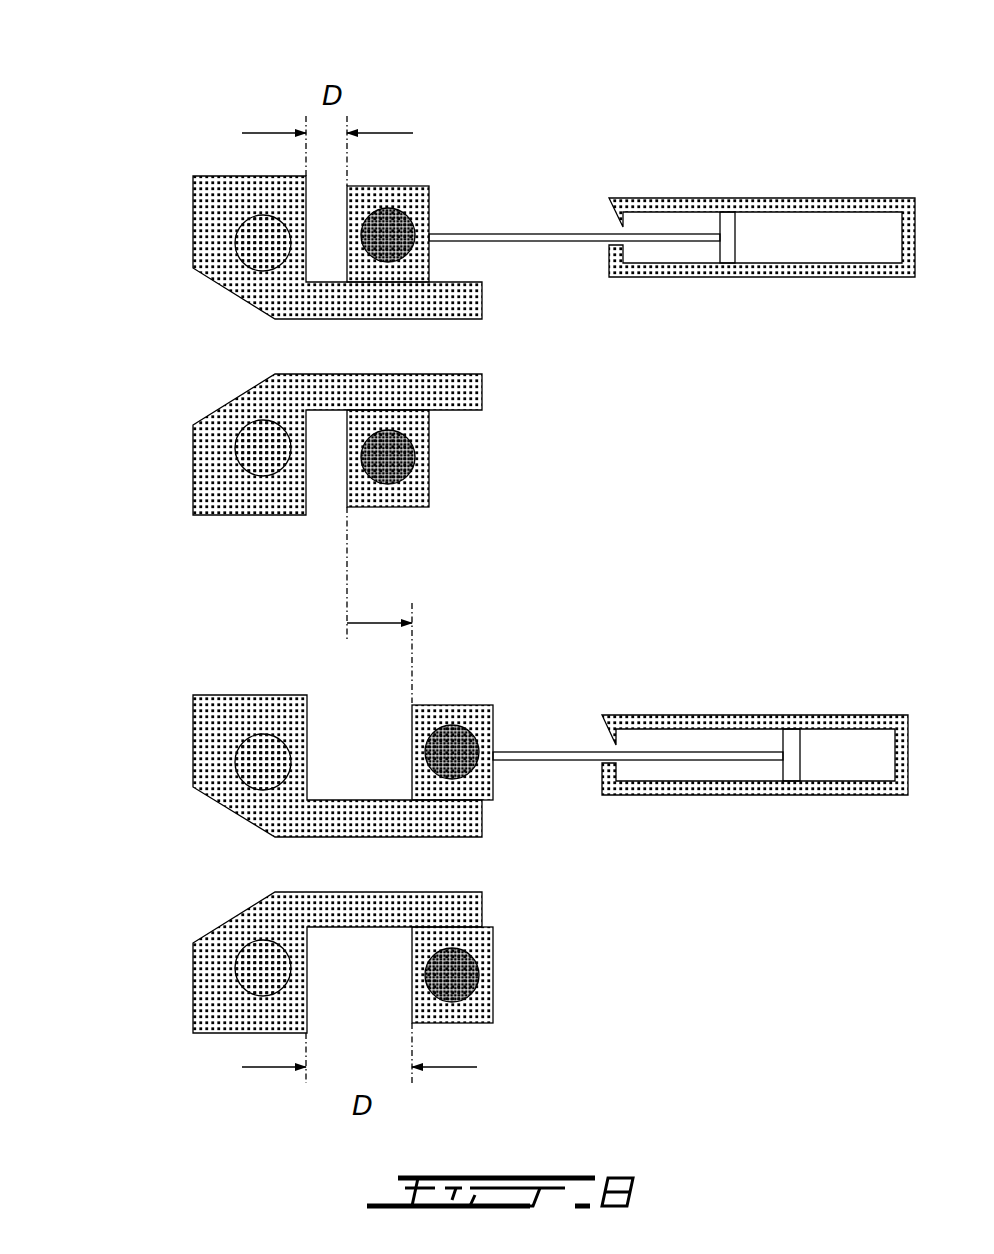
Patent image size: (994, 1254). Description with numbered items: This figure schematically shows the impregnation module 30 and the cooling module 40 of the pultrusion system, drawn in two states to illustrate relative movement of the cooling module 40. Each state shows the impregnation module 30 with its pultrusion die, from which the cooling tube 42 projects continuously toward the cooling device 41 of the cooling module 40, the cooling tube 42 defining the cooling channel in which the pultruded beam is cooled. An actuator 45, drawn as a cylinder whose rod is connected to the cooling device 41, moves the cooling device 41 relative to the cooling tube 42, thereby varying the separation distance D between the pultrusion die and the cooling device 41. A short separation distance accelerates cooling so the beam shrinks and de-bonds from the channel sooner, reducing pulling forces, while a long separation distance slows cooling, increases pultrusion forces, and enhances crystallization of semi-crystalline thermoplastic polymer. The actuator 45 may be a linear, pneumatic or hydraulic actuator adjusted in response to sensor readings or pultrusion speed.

The impregnation module 30 is at (137, 497).
The cooling module 40 is at (462, 148).
The cooling device 41 is at (429, 208).
The cooling tube 42 is at (482, 301).
The actuator 45 is at (781, 197).